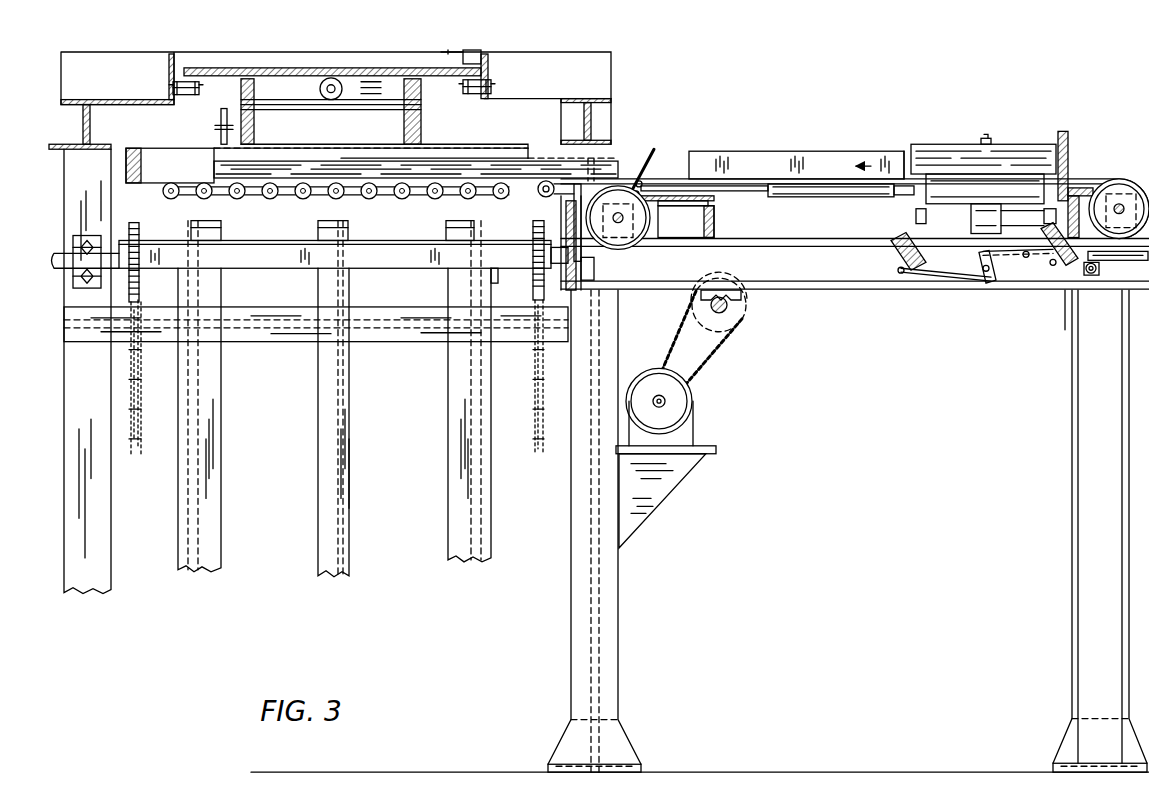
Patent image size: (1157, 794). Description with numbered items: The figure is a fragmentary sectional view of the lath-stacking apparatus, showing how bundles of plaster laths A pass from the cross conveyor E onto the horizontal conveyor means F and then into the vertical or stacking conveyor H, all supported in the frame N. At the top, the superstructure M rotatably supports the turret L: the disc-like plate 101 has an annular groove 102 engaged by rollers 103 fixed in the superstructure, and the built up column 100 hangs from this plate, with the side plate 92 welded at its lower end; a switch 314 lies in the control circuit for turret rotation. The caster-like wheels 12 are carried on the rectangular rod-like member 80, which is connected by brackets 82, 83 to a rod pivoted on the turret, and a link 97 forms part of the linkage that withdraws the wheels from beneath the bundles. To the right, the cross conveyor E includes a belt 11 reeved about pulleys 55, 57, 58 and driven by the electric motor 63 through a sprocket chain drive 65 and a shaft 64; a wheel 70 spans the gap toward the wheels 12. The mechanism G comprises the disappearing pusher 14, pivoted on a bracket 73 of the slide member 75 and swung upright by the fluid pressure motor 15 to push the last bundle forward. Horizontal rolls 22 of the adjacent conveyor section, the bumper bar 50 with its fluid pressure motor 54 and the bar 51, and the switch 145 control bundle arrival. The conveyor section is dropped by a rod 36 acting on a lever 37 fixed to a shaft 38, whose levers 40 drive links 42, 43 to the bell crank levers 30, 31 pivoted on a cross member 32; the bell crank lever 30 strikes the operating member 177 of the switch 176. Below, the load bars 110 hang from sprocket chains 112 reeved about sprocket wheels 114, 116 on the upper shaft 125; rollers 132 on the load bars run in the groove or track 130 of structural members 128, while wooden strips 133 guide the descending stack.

The superstructure M is at (612, 73).
The turret L is at (372, 72).
The disc-like plate 101 is at (403, 66).
The switch 314 is at (478, 52).
The annular groove 102 is at (318, 87).
The rollers 103 is at (344, 87).
The built up column 100 is at (403, 120).
The link 97 is at (220, 115).
The side plate 92 is at (513, 155).
The horizontal conveyor means F is at (131, 146).
The bundles of plaster laths A is at (210, 163).
The bracket 83 is at (247, 196).
The rectangular rod-like member 80 is at (282, 194).
The bracket 82 is at (410, 197).
The caster-like wheels 12 is at (462, 197).
The wheel 70 is at (546, 197).
The wheel or roller 132 is at (188, 222).
The tubular elevator or load bar 110 is at (290, 262).
The wooden strip 133 is at (220, 390).
The structural member 128 is at (177, 495).
The groove or track 130 is at (185, 524).
The sprocket wheel 116 is at (140, 283).
The sprocket chains 112 is at (143, 450).
The sprocket wheel 114 is at (535, 284).
The vertical or stacking conveyor H is at (533, 395).
The frame N is at (62, 315).
The switch 176 is at (1130, 282).
The bell crank lever 30 is at (1072, 292).
The belt 11 is at (760, 150).
The cross conveyor E is at (818, 177).
The bar 51 is at (900, 150).
The fluid pressure motor 15 is at (795, 190).
The disappearing pusher 14 is at (652, 150).
The mechanism G is at (668, 194).
The bracket 73 is at (666, 200).
The slide member 75 is at (710, 202).
The shaft 64 is at (715, 222).
The pulley 58 is at (642, 225).
The upper shaft 125 is at (593, 270).
The sprocket chain drive 65 is at (725, 345).
The electric motor 63 is at (690, 405).
The bumper bar 50 is at (914, 143).
The fluid pressure motor 54 is at (990, 138).
The switch 145 is at (1060, 140).
The horizontal rolls 22 is at (1000, 215).
The cross member 32 is at (1077, 195).
The pulley 57 is at (1125, 186).
The bell crank lever 31 is at (895, 252).
The link 43 is at (905, 276).
The lever 37 is at (978, 255).
The shaft 38 is at (983, 268).
The lever 40 is at (986, 274).
The link 42 is at (1025, 260).
The rod 36 is at (1052, 266).
The pulley 55 is at (1135, 260).
The operating member 177 is at (1093, 274).